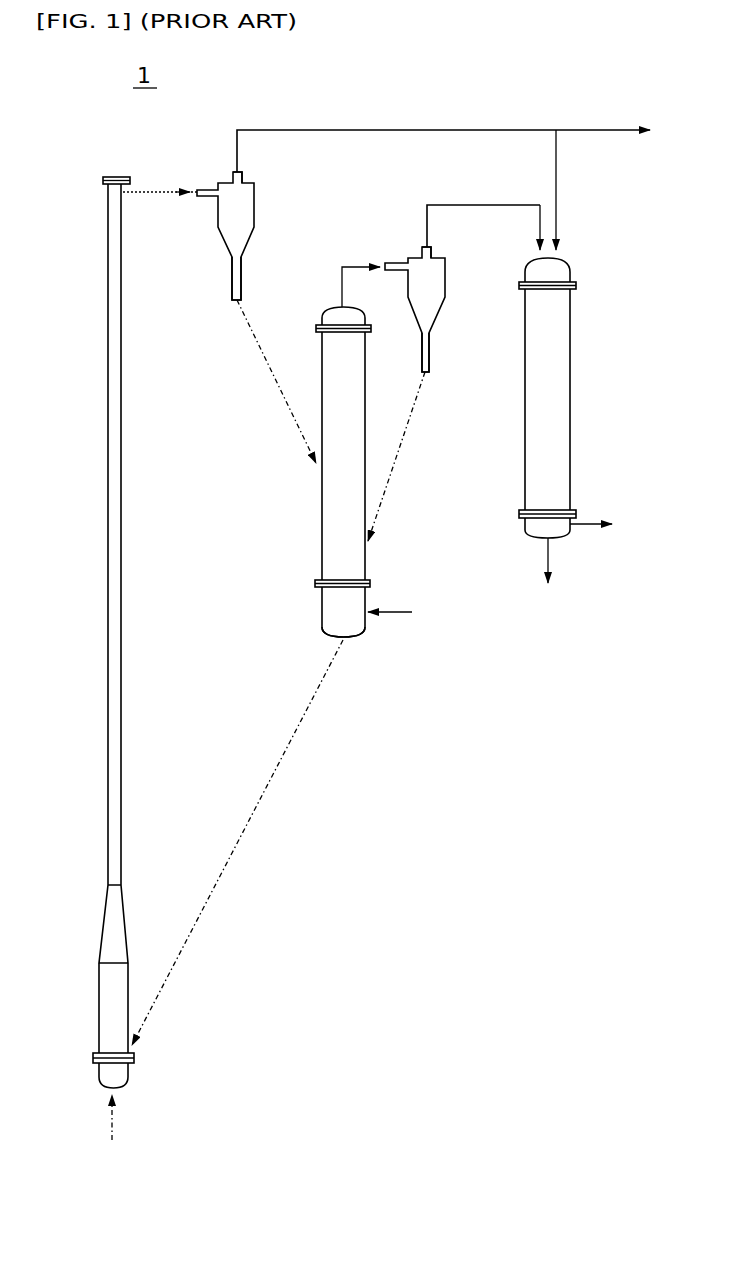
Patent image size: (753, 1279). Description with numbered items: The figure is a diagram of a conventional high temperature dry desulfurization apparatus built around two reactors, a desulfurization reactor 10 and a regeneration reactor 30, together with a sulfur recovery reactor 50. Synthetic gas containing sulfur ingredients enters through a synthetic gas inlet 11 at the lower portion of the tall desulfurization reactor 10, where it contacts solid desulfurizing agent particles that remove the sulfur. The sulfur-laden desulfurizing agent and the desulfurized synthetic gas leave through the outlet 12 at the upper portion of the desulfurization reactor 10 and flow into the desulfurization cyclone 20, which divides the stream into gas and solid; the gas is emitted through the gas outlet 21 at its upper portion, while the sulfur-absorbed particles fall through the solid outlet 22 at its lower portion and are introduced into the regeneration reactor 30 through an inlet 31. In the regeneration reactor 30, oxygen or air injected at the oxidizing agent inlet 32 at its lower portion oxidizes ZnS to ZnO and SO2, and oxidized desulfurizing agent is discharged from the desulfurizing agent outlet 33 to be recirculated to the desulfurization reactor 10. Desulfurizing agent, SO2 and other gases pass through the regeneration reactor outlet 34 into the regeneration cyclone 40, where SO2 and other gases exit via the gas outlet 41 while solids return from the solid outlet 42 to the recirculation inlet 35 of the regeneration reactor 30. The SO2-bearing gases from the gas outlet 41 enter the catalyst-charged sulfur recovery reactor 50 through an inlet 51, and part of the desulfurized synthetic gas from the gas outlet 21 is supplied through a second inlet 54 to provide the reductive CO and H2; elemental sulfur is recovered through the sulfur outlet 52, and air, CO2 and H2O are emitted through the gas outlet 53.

The desulfurization reactor 10 is at (108, 718).
The feed inlet 11 is at (117, 1088).
The outlet 12 is at (124, 190).
The desulfurization cyclone 20 is at (244, 205).
The gas outlet 21 is at (242, 178).
The solid outlet 22 is at (232, 278).
The regeneration reactor 30 is at (312, 400).
The solids inlet 31 is at (321, 467).
The oxidizing agent inlet 32 is at (366, 606).
The desulfurizing agent outlet 33 is at (342, 638).
The regeneration reactor outlet 34 is at (342, 307).
The recirculation inlet 35 is at (366, 552).
The regeneration cyclone 40 is at (436, 280).
The gas outlet 41 is at (432, 253).
The solid outlet 42 is at (429, 352).
The sulfur recovery reactor 50 is at (566, 354).
The first vessel inlet 51 is at (542, 258).
The sulfur outlet 52 is at (550, 540).
The gas outlet 53 is at (574, 522).
The second vessel inlet 54 is at (554, 258).